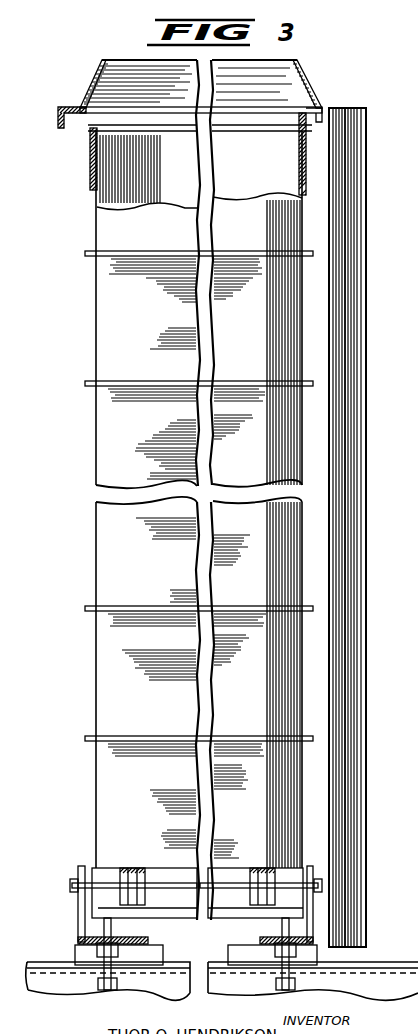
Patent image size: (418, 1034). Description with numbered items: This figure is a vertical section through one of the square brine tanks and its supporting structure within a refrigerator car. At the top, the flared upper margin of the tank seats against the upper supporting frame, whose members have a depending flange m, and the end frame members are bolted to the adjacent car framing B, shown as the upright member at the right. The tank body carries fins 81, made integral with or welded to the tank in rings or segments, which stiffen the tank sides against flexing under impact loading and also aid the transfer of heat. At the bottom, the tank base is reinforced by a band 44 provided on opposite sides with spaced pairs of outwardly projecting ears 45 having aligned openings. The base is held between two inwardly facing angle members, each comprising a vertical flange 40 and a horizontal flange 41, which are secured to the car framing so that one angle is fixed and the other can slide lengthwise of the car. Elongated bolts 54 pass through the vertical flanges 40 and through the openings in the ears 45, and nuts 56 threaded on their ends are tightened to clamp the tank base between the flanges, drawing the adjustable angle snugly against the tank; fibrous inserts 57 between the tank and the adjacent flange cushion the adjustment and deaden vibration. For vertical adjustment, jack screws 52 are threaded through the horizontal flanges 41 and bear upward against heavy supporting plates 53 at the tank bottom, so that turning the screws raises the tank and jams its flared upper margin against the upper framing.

The depending flange m is at (83, 122).
The car framing B is at (345, 300).
The fins 81 is at (155, 381).
The band 44 is at (100, 872).
The nuts 56 is at (72, 882).
The elongated bolts 54 is at (165, 883).
The fibrous inserts 57 is at (308, 868).
The vertical flange 40 is at (78, 900).
The ears 45 is at (122, 897).
The horizontal flange 41 is at (140, 940).
The supporting plates 53 is at (198, 920).
The jack screws 52 is at (105, 975).